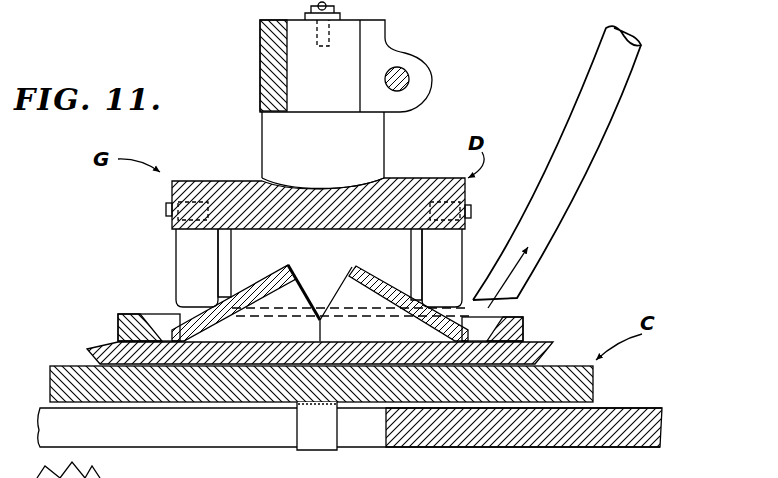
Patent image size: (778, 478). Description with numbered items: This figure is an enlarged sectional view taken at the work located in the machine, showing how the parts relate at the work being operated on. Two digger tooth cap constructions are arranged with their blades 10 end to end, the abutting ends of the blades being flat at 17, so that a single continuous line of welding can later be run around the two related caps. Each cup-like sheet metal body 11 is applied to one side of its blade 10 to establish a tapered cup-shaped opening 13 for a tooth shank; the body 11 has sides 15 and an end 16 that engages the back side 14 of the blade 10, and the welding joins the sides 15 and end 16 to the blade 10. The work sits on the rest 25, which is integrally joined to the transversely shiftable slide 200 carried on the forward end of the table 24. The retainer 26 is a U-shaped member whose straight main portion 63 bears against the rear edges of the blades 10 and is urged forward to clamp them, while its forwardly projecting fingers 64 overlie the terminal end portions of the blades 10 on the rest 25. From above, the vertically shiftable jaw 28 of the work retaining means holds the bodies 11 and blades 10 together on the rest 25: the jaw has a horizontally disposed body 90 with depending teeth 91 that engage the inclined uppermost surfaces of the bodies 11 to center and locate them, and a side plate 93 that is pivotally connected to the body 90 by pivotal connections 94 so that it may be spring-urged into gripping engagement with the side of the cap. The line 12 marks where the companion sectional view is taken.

The blade 10 is at (99, 338).
The cup-like sheet metal body 11 is at (262, 275).
The section line 12 is at (302, 171).
The cup-shaped opening 13 is at (298, 294).
The back side of the blade 14 is at (210, 340).
The sides of the body 15 is at (320, 326).
The end of the body 16 is at (208, 312).
The flat abutting ends of the blades 17 is at (321, 328).
The table 24 is at (620, 413).
The rest 25 is at (597, 377).
The retainer 26 is at (530, 335).
The jaw 28 is at (426, 250).
The main portion of the retainer 63 is at (287, 292).
The fingers 64 is at (135, 312).
The body of the jaw 90 is at (256, 192).
The teeth 91 is at (218, 243).
The shiftable side plate 93 is at (370, 236).
The pivotal connections 94 is at (470, 208).
The slide 200 is at (62, 362).